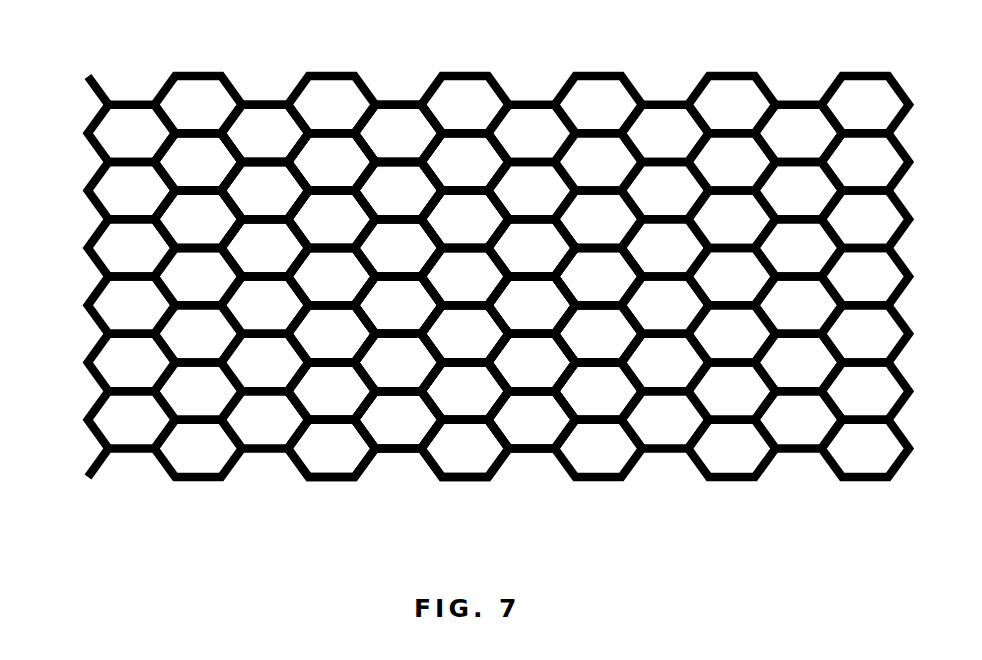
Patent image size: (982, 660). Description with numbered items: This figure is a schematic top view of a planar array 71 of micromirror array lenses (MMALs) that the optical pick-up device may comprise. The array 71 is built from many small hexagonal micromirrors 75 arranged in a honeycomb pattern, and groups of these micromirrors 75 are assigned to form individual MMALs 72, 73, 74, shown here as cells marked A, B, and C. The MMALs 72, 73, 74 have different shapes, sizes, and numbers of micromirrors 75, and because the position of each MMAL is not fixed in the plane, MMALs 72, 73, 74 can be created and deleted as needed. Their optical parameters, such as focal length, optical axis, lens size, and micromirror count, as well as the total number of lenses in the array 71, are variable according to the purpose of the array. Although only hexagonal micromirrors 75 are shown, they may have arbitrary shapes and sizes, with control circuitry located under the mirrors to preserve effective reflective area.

The planar array 71 is at (77, 103).
The MMAL 72 is at (447, 148).
The MMAL 73 is at (198, 232).
The MMAL 74 is at (488, 398).
The micromirror 75 is at (335, 452).